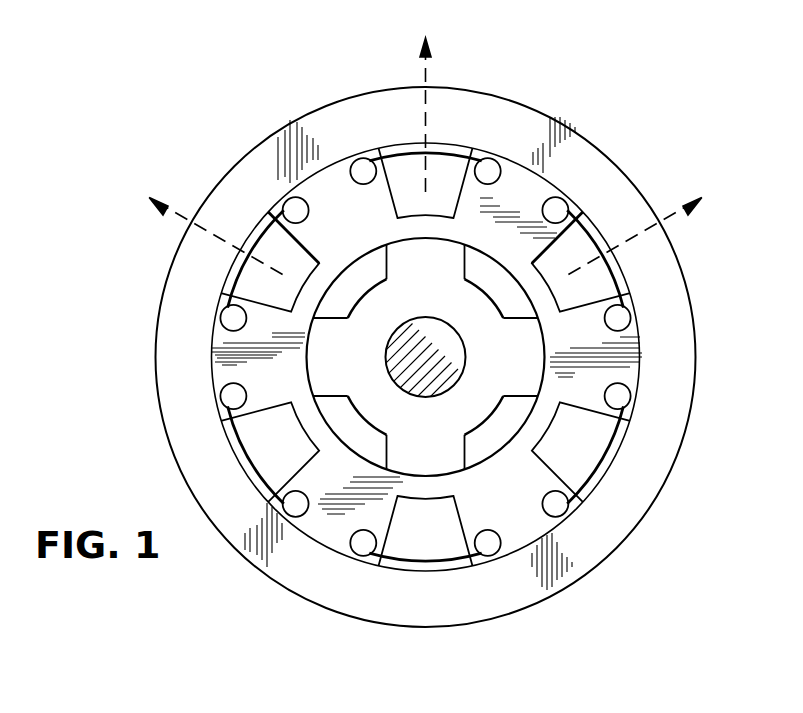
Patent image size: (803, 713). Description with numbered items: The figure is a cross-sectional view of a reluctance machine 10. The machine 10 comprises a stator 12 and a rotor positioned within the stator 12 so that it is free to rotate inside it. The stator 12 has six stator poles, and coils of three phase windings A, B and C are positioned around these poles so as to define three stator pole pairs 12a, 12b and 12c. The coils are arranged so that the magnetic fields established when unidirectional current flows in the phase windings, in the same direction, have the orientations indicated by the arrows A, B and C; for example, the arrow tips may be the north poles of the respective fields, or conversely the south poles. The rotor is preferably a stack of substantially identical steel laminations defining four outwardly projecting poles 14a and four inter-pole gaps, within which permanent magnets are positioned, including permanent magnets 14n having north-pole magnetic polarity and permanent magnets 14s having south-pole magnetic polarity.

The reluctance machine 10 is at (195, 172).
The stator 12 is at (157, 319).
The stator pole pair 12a is at (603, 277).
The stator pole pair 12b is at (447, 172).
The stator pole pair 12c is at (250, 283).
The outwardly projecting rotor poles 14a is at (417, 237).
The permanent magnets having north-pole polarity 14n is at (490, 257).
The permanent magnets having south-pole polarity 14s is at (363, 253).